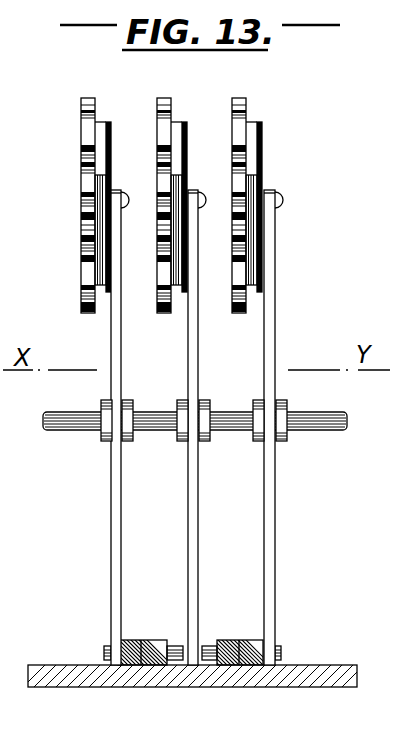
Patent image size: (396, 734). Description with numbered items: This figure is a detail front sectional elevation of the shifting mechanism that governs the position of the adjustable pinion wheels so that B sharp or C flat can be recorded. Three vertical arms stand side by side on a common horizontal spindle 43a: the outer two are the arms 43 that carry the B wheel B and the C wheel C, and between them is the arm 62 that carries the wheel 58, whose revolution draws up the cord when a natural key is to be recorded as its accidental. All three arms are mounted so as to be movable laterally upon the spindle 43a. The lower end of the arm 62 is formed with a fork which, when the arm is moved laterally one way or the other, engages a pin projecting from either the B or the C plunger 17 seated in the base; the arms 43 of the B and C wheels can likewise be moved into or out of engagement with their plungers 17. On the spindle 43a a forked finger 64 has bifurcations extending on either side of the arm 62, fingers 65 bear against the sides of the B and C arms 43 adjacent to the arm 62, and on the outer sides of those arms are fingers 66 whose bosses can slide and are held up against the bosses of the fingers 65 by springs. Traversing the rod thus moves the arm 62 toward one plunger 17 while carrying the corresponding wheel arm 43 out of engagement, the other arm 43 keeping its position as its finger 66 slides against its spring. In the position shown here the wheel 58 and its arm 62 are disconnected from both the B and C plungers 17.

The plunger 17 is at (134, 667).
The arm 43 is at (141, 364).
The spindle 43a is at (234, 426).
The wheel 58 is at (173, 94).
The arm 62 is at (199, 372).
The forked finger 64 is at (204, 400).
The fingers 65 is at (125, 432).
The fingers 66 is at (106, 432).
The B wheel B is at (95, 93).
The C wheel C is at (247, 93).